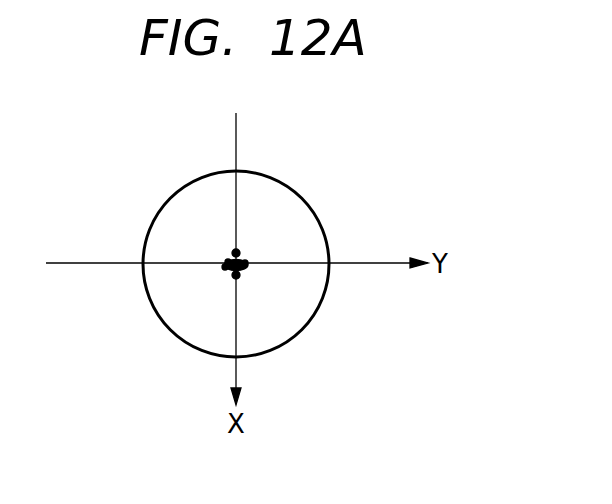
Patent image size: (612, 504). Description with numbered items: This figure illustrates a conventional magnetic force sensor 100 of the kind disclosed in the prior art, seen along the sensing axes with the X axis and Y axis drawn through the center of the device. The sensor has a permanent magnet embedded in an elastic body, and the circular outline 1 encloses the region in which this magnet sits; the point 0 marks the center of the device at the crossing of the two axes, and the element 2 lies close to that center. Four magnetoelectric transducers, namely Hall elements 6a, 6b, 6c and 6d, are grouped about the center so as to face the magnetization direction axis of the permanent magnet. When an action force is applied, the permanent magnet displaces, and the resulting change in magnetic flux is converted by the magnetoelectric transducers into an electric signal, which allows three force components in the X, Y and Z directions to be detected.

The image forming apparatus / optical system 100 is at (299, 224).
The circular region (lens/mirror boundary) 1 is at (308, 206).
The light spot 2 is at (240, 254).
The origin / center position 0 is at (252, 268).
The light spot 6a is at (242, 276).
The light spot 6b is at (230, 257).
The light spot 6c is at (250, 262).
The light spot 6d is at (228, 270).